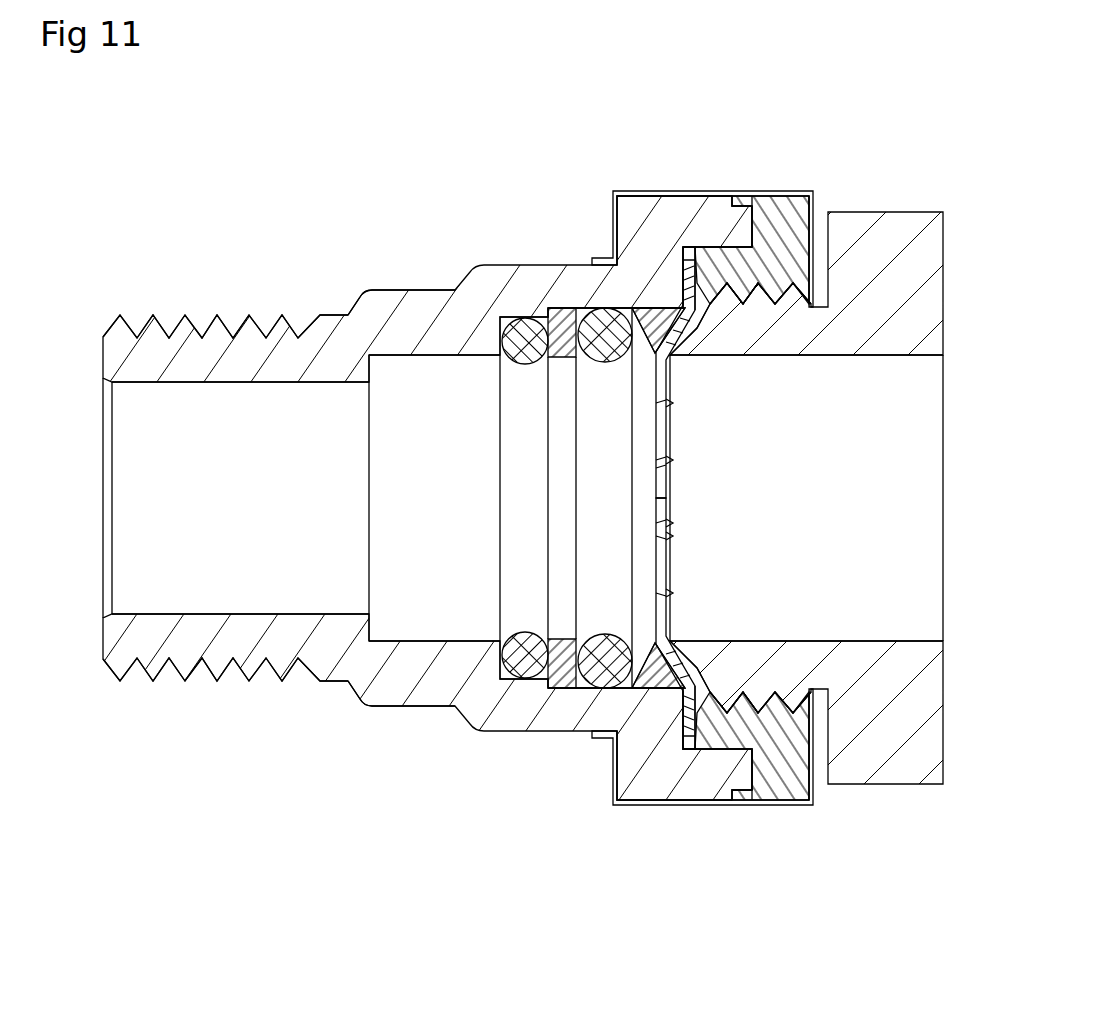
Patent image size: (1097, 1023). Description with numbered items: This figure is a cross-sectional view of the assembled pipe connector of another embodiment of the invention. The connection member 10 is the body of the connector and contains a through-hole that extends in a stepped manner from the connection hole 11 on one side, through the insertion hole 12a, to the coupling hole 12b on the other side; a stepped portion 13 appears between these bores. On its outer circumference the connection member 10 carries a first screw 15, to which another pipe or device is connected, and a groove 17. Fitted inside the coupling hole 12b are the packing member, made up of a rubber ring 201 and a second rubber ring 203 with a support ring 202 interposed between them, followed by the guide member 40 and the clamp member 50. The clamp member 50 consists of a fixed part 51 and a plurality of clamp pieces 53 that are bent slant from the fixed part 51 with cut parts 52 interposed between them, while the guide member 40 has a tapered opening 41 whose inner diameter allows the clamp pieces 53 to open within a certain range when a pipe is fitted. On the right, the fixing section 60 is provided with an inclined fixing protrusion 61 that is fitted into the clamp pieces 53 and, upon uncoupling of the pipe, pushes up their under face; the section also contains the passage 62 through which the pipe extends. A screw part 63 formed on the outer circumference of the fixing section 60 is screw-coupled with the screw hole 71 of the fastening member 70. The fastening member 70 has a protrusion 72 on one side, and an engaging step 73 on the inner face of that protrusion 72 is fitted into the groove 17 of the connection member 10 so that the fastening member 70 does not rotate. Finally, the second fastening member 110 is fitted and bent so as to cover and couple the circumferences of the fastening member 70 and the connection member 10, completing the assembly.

The connection member 10 is at (437, 280).
The connection hole 11 is at (155, 613).
The insertion hole 12a is at (417, 358).
The coupling hole 12b is at (571, 333).
The stepped portion 13 is at (372, 362).
The first screw 15 is at (192, 320).
The groove 17 is at (740, 200).
The guide member 40 is at (653, 700).
The tapered opening 41 is at (647, 340).
The clamp member 50 is at (678, 517).
The fixed part 51 is at (690, 745).
The cut parts 52 is at (668, 470).
The clamp pieces 53 is at (668, 430).
The fixing section 60 is at (908, 202).
The inclined fixing protrusion 61 is at (690, 650).
The passage 62 is at (885, 785).
The screw part 63 is at (786, 284).
The fastening member 70 is at (783, 794).
The screw hole 71 is at (775, 690).
The protrusion 72 is at (750, 236).
The engaging step 73 is at (753, 197).
The second fastening member 110 is at (622, 190).
The rubber ring 201 is at (520, 668).
The support ring 202 is at (600, 668).
The rubber ring 203 is at (597, 690).